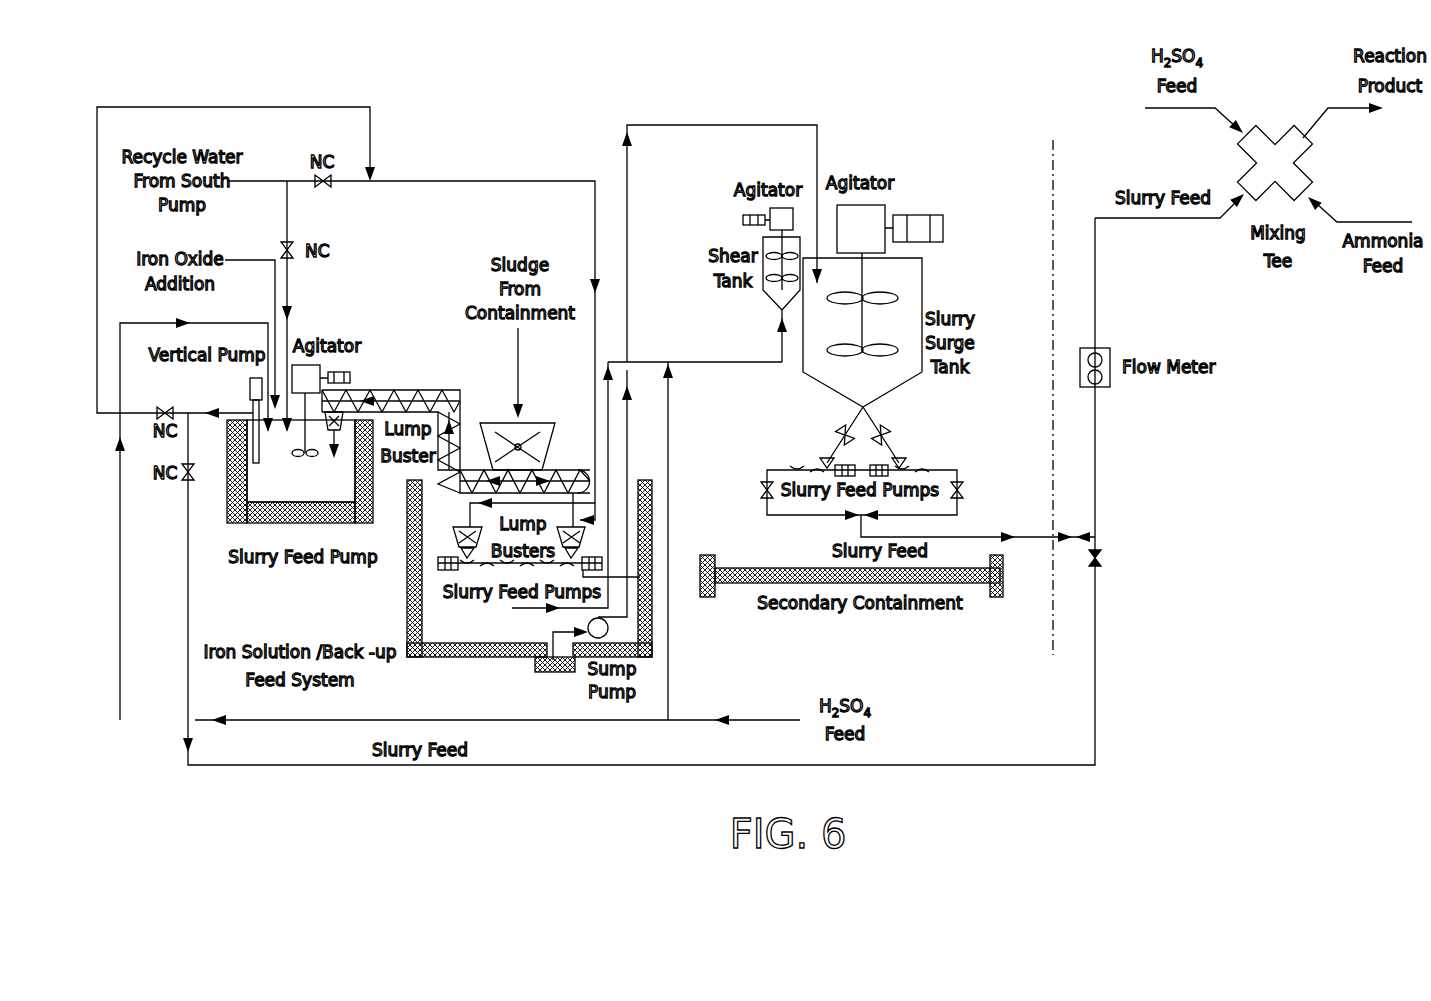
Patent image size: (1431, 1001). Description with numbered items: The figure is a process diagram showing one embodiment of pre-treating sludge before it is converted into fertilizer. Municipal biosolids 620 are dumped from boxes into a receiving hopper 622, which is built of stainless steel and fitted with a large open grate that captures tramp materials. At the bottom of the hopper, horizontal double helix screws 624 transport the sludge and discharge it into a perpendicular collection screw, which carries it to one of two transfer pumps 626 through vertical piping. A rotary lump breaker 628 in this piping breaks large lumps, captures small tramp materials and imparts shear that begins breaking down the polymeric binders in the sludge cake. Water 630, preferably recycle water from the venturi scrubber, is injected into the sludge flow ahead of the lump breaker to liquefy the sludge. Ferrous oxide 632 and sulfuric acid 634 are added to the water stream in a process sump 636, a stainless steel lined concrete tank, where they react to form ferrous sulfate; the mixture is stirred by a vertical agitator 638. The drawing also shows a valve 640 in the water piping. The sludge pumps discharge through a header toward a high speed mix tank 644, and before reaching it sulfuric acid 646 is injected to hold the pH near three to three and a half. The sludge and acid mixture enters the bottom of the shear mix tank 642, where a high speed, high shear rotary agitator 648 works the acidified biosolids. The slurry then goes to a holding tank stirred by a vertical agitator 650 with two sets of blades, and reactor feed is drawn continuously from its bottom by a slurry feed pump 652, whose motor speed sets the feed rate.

The municipal biosolids 620 is at (520, 352).
The receiving hopper 622 is at (553, 423).
The double helix screws 624 is at (403, 390).
The transfer pumps 626 is at (645, 585).
The rotary lump breaker 628 is at (453, 537).
The water 630 is at (455, 181).
The ferrous oxide 632 is at (265, 258).
The sulfuric acid 634 is at (233, 323).
The process sump 636 is at (258, 503).
The vertical agitator 638 is at (322, 368).
The valve 640 is at (250, 410).
The shear mix tank 642 is at (763, 290).
The mix tank 644 is at (922, 295).
The sulfuric acid 646 is at (697, 362).
The rotary agitator 648 is at (795, 220).
The vertical agitator 650 is at (875, 212).
The slurry feed pump 652 is at (918, 468).